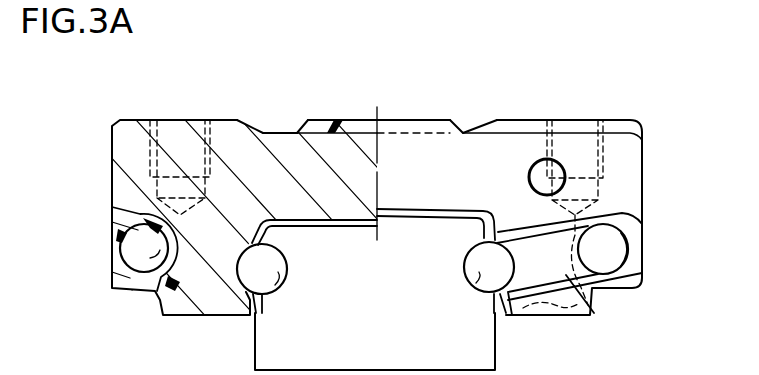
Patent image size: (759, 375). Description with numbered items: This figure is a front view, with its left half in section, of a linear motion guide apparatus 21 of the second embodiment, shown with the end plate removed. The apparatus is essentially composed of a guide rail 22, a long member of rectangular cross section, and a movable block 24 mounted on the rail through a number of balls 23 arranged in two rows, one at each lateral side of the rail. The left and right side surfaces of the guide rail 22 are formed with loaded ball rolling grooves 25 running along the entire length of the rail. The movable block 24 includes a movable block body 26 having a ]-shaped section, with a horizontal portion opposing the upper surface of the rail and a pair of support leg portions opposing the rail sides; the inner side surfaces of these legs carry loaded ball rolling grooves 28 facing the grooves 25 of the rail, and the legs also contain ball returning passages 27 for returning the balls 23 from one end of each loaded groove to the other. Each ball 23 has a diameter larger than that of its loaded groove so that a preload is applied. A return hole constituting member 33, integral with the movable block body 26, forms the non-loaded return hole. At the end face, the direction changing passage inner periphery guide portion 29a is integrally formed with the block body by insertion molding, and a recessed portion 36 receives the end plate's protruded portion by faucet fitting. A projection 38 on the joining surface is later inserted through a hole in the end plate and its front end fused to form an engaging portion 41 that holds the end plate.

The linear motion guide apparatus 21 is at (578, 100).
The guide rail 22 is at (493, 360).
The balls 23 is at (283, 262).
The movable block 24 is at (346, 105).
The loaded ball rolling grooves 25 is at (270, 295).
The movable block body 26 is at (280, 128).
The ball returning passages 27 is at (126, 241).
The loaded ball rolling grooves 28 is at (250, 254).
The direction changing passage inner periphery guide portion 29a is at (588, 314).
The return hole constituting member 33 is at (118, 291).
The recessed portion 36 is at (620, 212).
The projection 38 is at (565, 173).
The engaging portion 41 is at (464, 131).